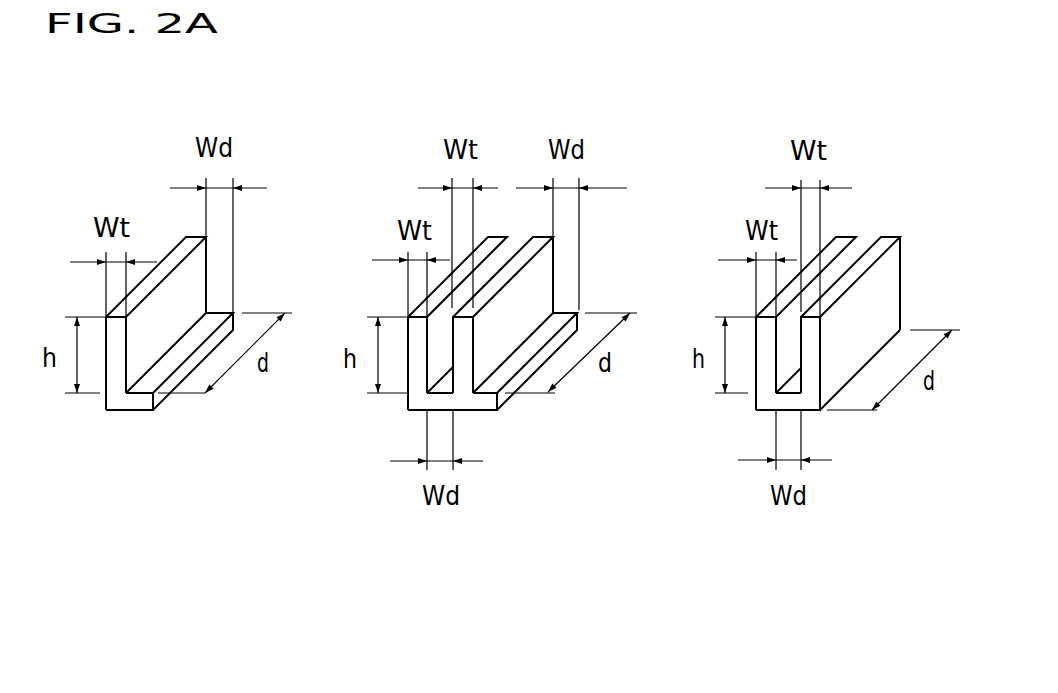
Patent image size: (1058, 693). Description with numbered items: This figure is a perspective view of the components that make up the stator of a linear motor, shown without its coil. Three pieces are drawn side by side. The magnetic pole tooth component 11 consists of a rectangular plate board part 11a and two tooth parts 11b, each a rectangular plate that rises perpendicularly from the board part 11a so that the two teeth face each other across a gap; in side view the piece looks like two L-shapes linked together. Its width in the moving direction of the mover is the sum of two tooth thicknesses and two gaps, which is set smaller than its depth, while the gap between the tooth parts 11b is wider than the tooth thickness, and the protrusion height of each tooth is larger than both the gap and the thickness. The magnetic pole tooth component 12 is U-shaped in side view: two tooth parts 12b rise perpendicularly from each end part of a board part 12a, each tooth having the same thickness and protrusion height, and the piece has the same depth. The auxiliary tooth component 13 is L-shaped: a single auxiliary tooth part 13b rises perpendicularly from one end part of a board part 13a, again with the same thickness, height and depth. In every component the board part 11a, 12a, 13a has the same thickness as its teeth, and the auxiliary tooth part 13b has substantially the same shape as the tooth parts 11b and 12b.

The magnetic pole tooth component 11 is at (410, 198).
The board part 11a is at (468, 405).
The tooth parts 11b is at (537, 237).
The magnetic pole tooth component 12 is at (752, 192).
The board part 12a is at (812, 407).
The tooth parts 12b is at (888, 238).
The auxiliary tooth component 13 is at (153, 207).
The board part 13a is at (130, 405).
The auxiliary tooth part 13b is at (113, 338).